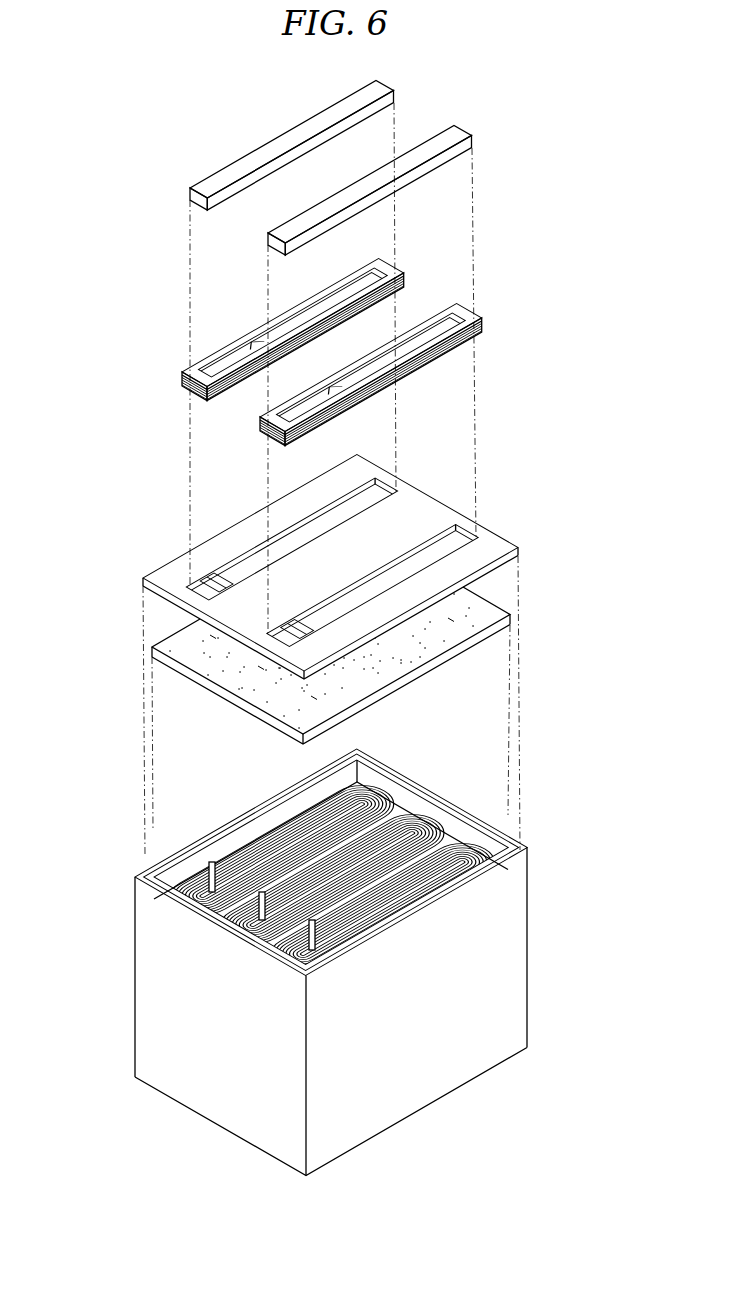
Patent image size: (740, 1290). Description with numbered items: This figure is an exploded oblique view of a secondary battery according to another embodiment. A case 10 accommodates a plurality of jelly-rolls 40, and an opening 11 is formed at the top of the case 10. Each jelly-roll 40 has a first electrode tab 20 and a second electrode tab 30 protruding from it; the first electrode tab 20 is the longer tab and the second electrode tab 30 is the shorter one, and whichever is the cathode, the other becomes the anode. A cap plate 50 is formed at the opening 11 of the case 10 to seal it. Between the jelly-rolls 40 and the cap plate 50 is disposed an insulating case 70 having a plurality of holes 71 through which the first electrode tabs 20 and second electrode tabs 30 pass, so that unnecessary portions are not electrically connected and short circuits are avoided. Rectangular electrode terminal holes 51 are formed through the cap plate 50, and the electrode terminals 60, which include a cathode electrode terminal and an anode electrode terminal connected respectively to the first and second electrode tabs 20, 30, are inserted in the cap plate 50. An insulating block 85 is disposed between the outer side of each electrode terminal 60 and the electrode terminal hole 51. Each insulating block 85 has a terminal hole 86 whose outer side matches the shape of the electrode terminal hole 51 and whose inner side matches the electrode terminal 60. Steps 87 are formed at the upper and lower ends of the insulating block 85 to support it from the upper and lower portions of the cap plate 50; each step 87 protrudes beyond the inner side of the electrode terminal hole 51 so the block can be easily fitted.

The case 10 is at (543, 930).
The opening 11 is at (405, 812).
The first electrode tab 20 is at (212, 862).
The second electrode tab 30 is at (490, 840).
The jelly-roll 40 is at (430, 830).
The cap plate 50 is at (445, 492).
The electrode terminal hole 51 is at (447, 542).
The electrode terminal 60 is at (233, 145).
The insulating case 70 is at (517, 602).
The hole 71 is at (213, 637).
The insulating block 85 is at (182, 395).
The terminal hole 86 is at (418, 347).
The step 87 is at (183, 378).